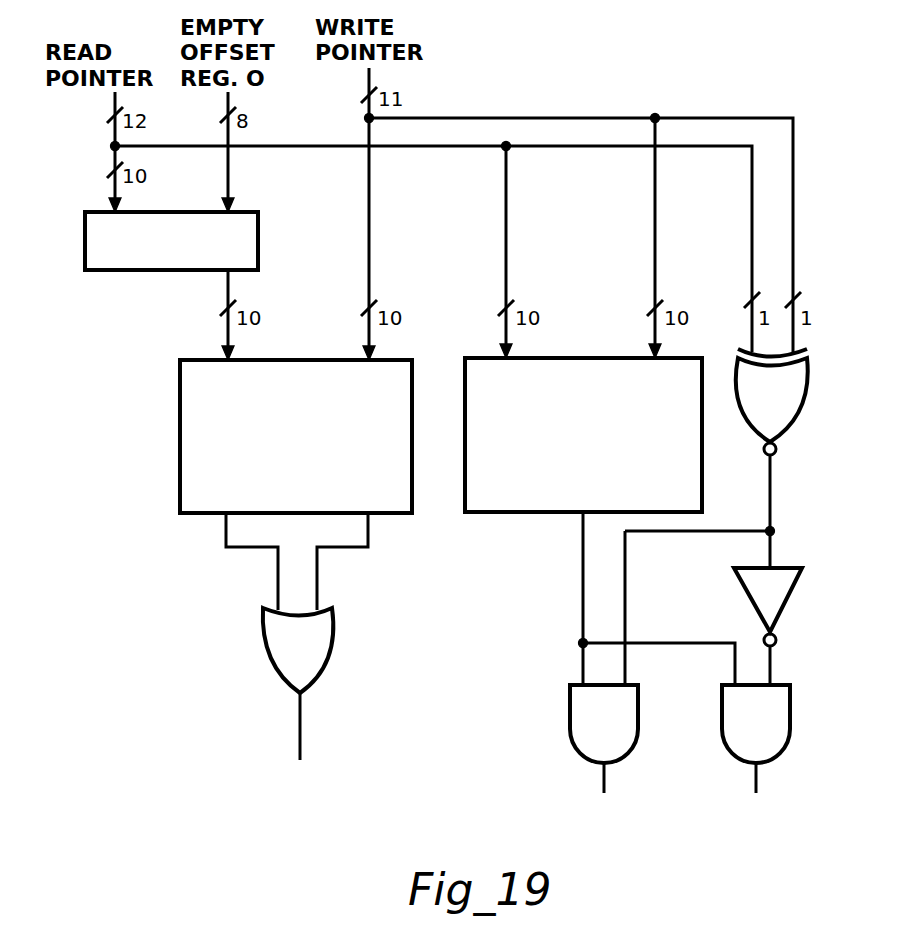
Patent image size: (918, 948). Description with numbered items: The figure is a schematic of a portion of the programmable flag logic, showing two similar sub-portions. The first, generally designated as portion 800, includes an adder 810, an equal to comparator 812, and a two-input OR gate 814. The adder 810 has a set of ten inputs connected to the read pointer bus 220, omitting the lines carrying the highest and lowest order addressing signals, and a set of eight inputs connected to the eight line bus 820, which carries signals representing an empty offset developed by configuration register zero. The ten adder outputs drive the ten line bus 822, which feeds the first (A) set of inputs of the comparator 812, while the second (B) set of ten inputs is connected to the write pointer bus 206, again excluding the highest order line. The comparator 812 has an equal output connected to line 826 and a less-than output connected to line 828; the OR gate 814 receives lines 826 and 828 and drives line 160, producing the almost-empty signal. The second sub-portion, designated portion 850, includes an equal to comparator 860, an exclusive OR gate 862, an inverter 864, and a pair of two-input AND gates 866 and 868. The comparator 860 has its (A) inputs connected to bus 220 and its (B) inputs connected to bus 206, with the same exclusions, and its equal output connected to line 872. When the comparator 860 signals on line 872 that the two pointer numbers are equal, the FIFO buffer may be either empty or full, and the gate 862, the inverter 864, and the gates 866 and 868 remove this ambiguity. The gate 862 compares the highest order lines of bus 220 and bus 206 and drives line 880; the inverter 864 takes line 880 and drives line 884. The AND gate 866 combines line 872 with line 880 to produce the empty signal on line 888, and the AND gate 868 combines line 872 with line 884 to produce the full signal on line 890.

The bus 220 is at (108, 143).
The eight line bus 820 is at (230, 171).
The adder 810 is at (85, 244).
The ten line bus 822 is at (226, 296).
The bus 206 is at (371, 200).
The equal to comparator 812 is at (180, 444).
The line 826 is at (278, 587).
The line 828 is at (317, 587).
The two-input OR gate 814 is at (310, 655).
The portion 800 is at (196, 603).
The line 160 is at (300, 722).
The equal to comparator 860 is at (560, 512).
The line 872 is at (583, 587).
The portion 850 is at (473, 570).
The exclusive OR gate 862 is at (792, 405).
The line 880 is at (770, 493).
The inverter 864 is at (784, 598).
The line 884 is at (770, 660).
The two-input AND gate 866 is at (625, 733).
The two-input AND gate 868 is at (778, 733).
The line 888 is at (604, 779).
The line 890 is at (756, 781).